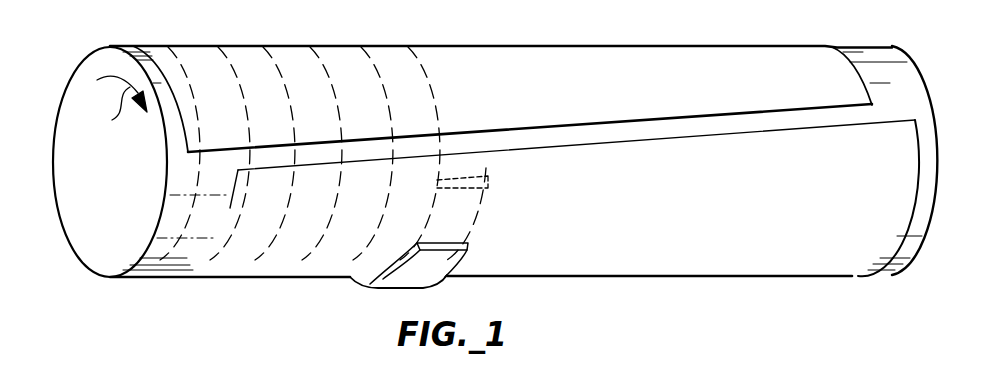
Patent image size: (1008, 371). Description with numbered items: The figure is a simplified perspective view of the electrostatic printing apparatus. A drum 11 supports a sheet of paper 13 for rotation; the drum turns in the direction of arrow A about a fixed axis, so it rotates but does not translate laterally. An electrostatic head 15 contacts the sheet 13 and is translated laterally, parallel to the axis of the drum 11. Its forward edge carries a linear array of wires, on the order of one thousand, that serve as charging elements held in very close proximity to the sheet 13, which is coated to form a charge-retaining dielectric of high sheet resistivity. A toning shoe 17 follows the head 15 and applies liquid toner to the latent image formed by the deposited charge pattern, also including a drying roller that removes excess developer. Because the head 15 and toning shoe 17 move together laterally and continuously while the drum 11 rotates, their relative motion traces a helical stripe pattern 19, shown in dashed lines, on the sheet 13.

The drum 11 is at (85, 90).
The sheet of paper 13 is at (518, 55).
The electrostatic head 15 is at (488, 176).
The toning shoe 17 is at (457, 261).
The helical stripe pattern 19 is at (270, 257).